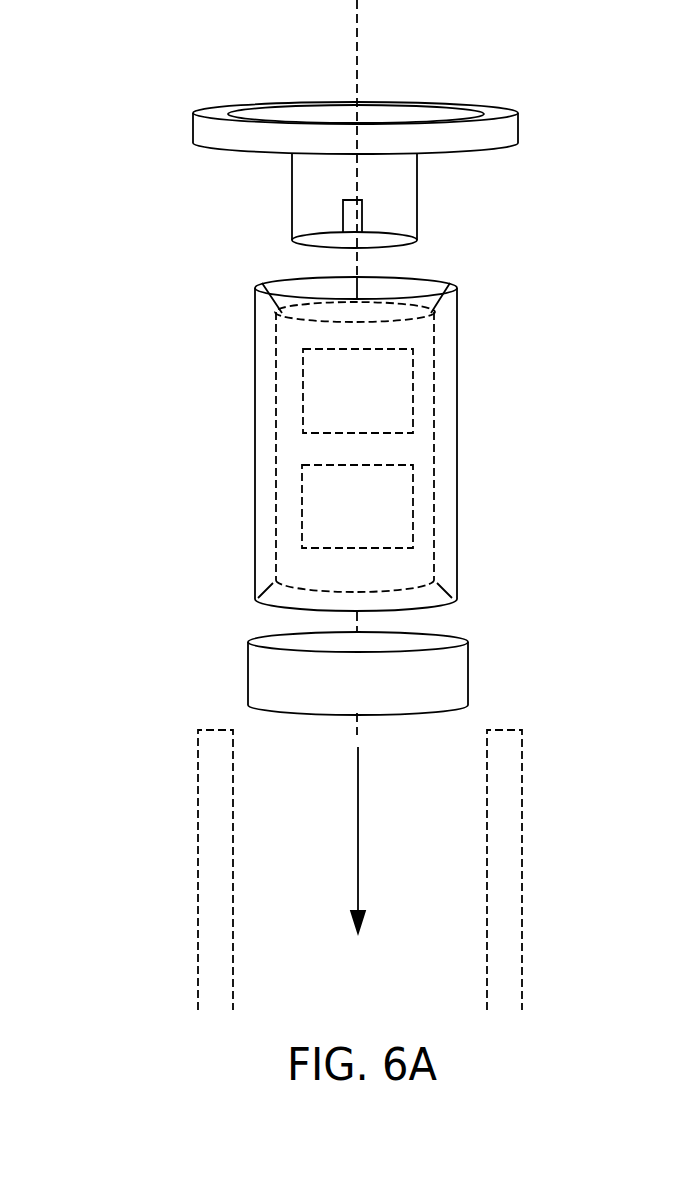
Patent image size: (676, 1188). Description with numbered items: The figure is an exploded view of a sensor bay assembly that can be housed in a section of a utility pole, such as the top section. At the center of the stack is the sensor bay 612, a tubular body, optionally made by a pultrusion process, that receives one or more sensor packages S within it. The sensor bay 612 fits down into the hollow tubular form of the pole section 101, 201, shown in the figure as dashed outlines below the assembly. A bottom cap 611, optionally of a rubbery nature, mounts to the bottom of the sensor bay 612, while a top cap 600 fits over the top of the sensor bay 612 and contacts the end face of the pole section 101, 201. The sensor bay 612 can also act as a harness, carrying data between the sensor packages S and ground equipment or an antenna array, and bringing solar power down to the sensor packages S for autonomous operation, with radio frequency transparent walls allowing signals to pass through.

The top cap 600 is at (196, 84).
The sensor bay 612 is at (254, 433).
The sensor package S is at (390, 382).
The bottom cap 611 is at (248, 680).
The pole section 101 is at (282, 870).
The pole section 201 is at (213, 798).